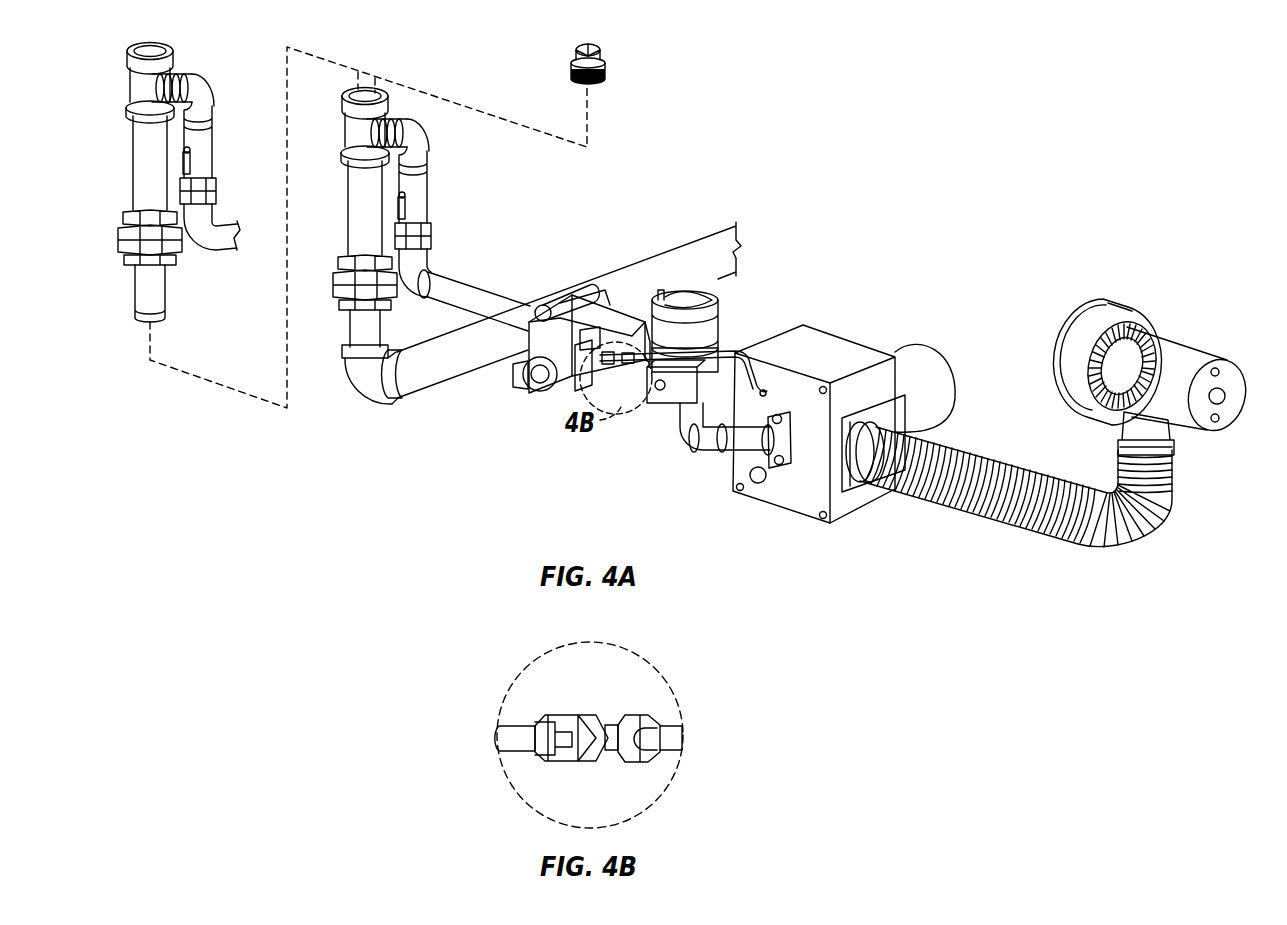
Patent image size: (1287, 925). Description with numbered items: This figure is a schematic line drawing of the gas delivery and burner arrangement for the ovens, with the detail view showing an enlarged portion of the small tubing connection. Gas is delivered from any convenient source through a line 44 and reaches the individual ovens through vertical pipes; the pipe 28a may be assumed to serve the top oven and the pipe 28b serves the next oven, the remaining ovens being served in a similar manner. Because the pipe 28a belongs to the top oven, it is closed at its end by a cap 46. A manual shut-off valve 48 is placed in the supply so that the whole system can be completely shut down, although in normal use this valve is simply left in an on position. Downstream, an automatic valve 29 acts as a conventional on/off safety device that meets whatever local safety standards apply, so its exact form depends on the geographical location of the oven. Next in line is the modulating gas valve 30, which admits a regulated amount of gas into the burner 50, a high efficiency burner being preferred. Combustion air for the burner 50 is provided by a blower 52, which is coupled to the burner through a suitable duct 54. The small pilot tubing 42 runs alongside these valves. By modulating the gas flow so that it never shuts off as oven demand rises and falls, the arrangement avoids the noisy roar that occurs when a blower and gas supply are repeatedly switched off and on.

The pipe 28a is at (130, 182).
The pipe 28b is at (345, 222).
The manual shut-off valve 48 is at (428, 220).
The cap 46 is at (608, 63).
The line 44 is at (662, 254).
The pilot tube 42 is at (727, 292).
The automatic valve 29 is at (560, 397).
The modulating gas valve 30 is at (719, 316).
The burner 50 is at (808, 490).
The blower 52 is at (1187, 360).
The duct 54 is at (1048, 540).